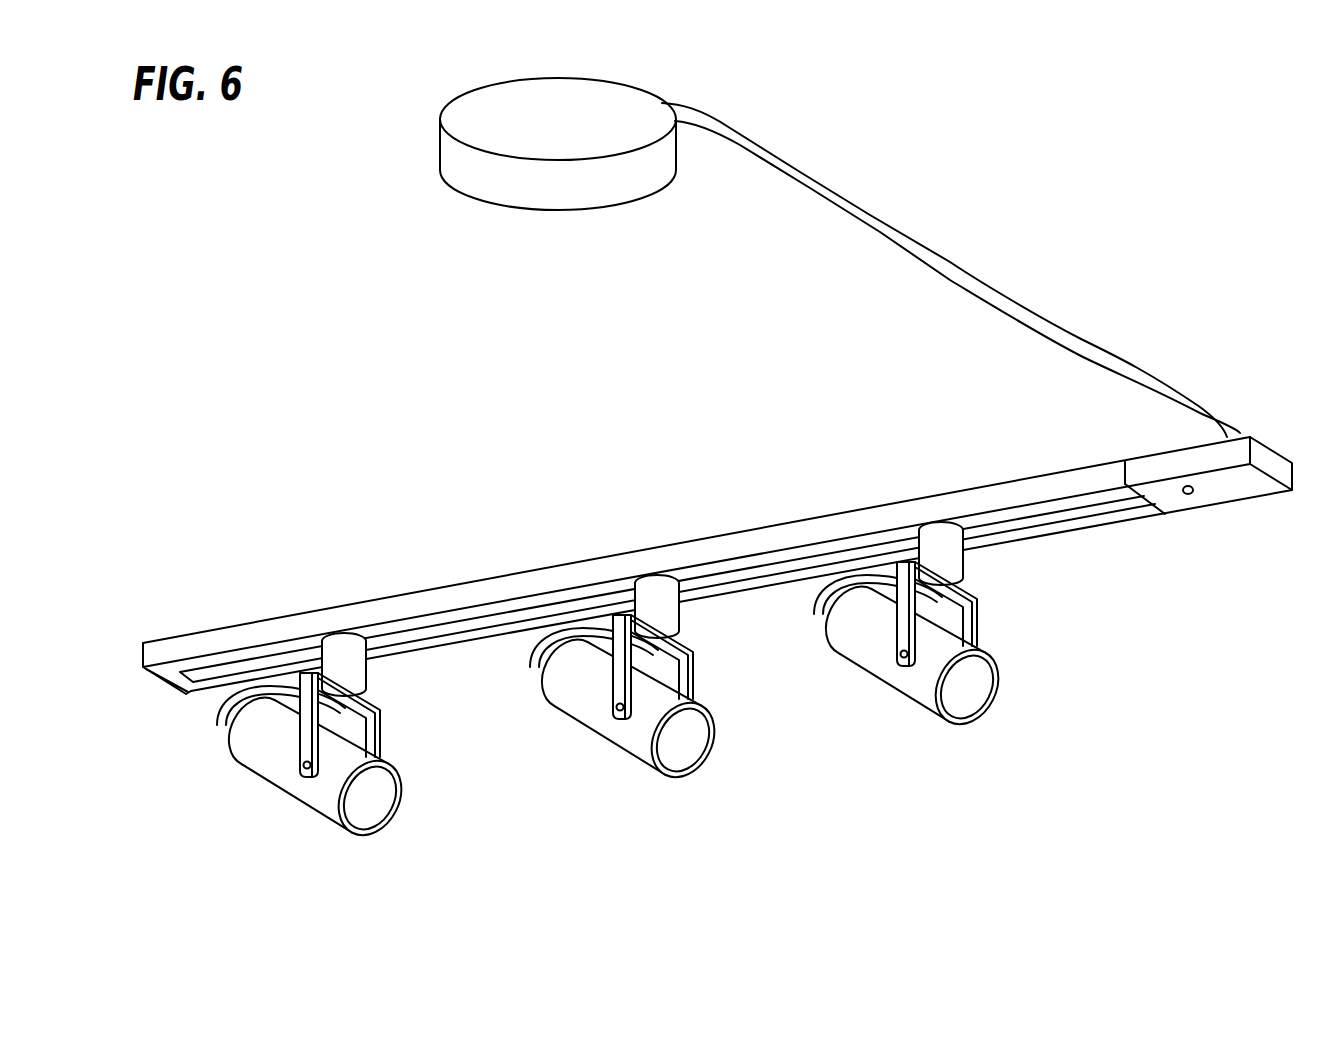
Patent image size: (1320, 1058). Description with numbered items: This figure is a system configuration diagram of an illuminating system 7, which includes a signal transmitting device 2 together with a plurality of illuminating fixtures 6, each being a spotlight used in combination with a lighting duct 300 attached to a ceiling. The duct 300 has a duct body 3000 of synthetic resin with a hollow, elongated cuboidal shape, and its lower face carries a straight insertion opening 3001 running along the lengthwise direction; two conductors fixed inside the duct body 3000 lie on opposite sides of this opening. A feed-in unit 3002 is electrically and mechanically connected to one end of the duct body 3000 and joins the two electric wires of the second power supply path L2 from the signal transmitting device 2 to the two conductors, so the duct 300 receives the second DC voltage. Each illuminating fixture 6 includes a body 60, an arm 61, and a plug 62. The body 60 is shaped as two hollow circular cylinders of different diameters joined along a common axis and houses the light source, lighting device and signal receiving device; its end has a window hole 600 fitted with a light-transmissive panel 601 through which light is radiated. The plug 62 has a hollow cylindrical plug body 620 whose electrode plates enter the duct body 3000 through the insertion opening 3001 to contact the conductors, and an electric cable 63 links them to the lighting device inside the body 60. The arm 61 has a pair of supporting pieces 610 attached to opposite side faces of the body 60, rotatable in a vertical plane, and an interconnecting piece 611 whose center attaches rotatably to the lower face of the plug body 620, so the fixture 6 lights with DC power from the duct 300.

The signal transmitting device 2 is at (528, 180).
The second power supply path L2 is at (910, 235).
The illuminating system 7 is at (1082, 260).
The lighting duct 300 is at (458, 597).
The duct body 3000 is at (1028, 466).
The insertion opening 3001 is at (1072, 507).
The feed-in unit 3002 is at (1230, 488).
The illuminating fixture 6 is at (850, 648).
The body 60 is at (925, 720).
The window hole 600 is at (997, 690).
The panel 601 is at (962, 695).
The arm 61 is at (990, 620).
The supporting pieces 610 is at (902, 616).
The interconnecting piece 611 is at (977, 587).
The plug 62 is at (952, 555).
The plug body 620 is at (934, 518).
The electric cable 63 is at (822, 607).